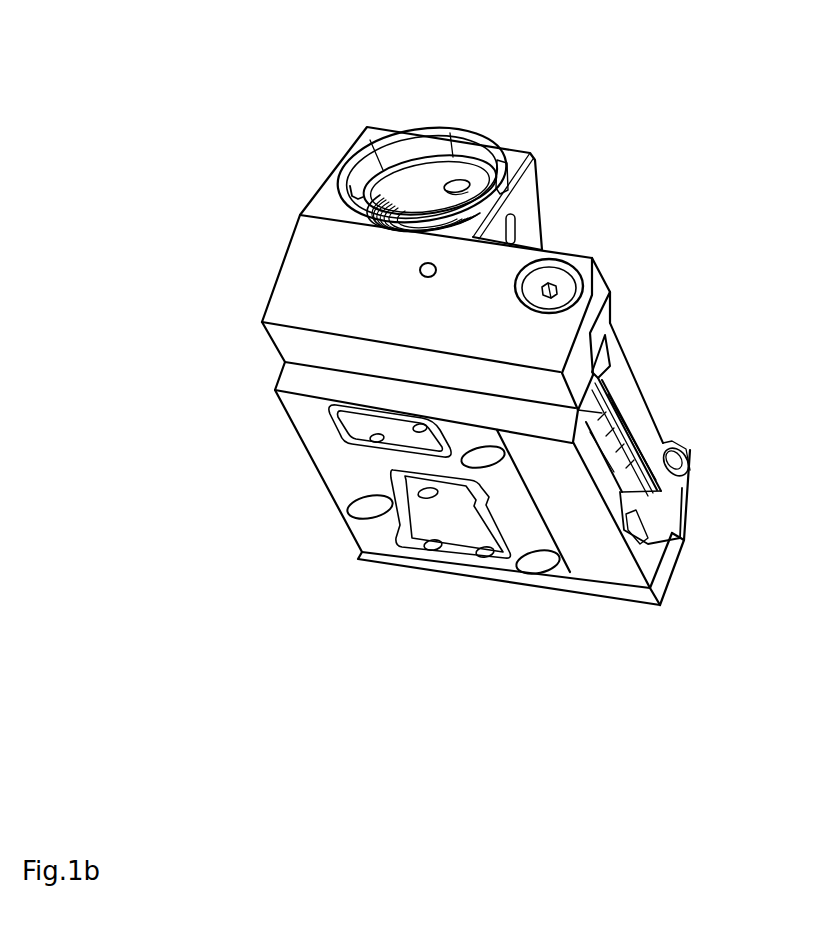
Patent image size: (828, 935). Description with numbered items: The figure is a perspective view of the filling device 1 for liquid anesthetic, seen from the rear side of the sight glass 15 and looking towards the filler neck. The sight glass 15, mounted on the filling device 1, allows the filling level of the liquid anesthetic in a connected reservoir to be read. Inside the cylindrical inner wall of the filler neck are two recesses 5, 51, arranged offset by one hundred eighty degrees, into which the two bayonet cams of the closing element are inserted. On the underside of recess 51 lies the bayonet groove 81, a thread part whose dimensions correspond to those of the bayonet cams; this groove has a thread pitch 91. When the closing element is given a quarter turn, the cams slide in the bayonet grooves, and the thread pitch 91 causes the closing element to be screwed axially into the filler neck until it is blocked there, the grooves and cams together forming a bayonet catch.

The filling device 1 is at (200, 200).
The recess 51 is at (360, 173).
The bayonet groove 81 is at (383, 170).
The thread pitch 91 is at (414, 161).
The recess 5 is at (505, 163).
The sight glass 15 is at (628, 410).